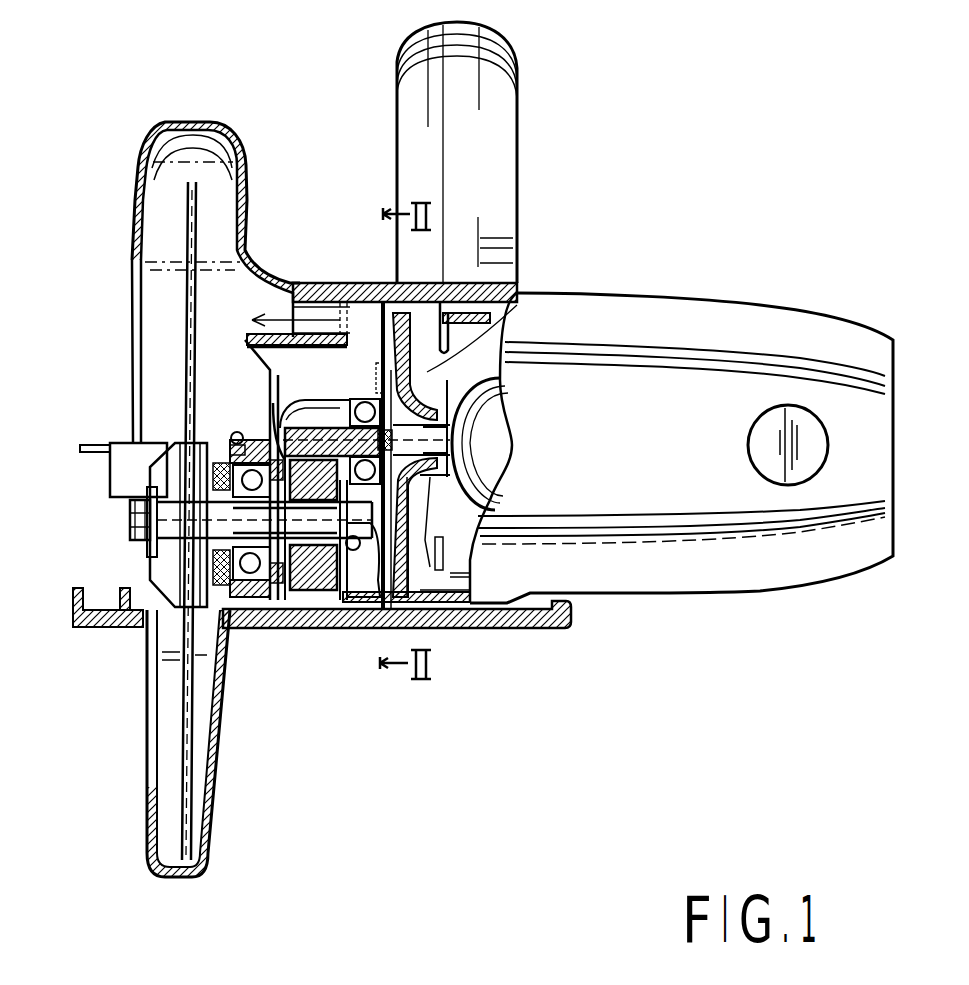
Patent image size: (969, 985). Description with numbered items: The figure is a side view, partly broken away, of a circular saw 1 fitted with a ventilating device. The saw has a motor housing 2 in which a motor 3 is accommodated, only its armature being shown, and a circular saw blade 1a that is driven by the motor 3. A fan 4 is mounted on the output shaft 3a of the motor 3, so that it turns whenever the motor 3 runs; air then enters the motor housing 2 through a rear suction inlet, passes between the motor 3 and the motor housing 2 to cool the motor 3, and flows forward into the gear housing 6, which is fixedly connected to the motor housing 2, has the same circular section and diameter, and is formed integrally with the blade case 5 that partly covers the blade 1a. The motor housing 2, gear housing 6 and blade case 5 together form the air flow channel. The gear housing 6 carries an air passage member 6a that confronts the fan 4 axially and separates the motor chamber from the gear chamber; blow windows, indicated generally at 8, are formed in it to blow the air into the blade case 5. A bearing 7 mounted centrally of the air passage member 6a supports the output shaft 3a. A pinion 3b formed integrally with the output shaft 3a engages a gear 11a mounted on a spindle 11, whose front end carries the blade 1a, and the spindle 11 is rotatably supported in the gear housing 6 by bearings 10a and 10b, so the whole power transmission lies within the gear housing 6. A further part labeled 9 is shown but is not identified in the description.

The circular saw 1 is at (669, 153).
The circular saw blade 1a is at (245, 348).
The motor housing 2 is at (655, 310).
The motor 3 is at (482, 443).
The output shaft 3a is at (437, 609).
The pinion 3b is at (313, 428).
The fan 4 is at (517, 293).
The blade case 5 is at (233, 128).
The gear housing 6 is at (330, 283).
The air passage member 6a is at (432, 292).
The bearing 7 is at (337, 627).
The air passage 8 is at (277, 303).
The cooling fan 9 is at (410, 292).
The bearing 10a is at (363, 602).
The bearing 10b is at (233, 600).
The spindle 11 is at (243, 605).
The gear 11a is at (288, 592).